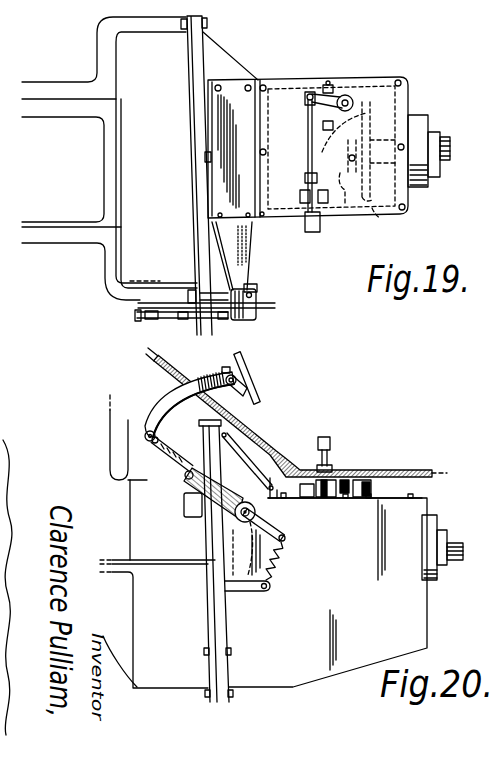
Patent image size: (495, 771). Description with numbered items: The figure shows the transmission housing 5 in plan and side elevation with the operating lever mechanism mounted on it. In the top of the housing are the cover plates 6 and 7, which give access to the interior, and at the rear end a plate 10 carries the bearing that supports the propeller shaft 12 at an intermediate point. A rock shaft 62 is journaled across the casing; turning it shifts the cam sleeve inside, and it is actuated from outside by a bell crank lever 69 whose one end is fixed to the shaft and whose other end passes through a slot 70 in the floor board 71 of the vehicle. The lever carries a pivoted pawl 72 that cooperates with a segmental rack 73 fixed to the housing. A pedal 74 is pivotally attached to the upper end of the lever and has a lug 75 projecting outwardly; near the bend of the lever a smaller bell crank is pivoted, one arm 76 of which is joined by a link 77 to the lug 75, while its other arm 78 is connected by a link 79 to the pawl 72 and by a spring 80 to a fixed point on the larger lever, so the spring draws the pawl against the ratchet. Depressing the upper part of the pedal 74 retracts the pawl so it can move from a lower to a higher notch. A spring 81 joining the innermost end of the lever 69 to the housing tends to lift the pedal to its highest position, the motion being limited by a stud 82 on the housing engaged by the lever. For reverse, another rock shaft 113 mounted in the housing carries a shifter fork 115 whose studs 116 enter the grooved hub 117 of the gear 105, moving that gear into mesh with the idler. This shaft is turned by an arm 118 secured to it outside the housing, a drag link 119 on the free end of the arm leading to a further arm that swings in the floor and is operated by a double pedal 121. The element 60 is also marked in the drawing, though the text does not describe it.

In FIG. 19, the transmission housing 5 is at (205, 73).
In FIG. 20, the transmission housing 5 is at (328, 582).
In FIG. 19, the cover plate 6 is at (306, 147).
In FIG. 20, the cover plate 6 is at (258, 441).
In FIG. 19, the cover plate 7 is at (383, 98).
In FIG. 20, the cover plate 7 is at (400, 504).
In FIG. 19, the plate 10 is at (410, 111).
In FIG. 20, the plate 10 is at (427, 614).
In FIG. 19, the propeller shaft 12 is at (446, 141).
In FIG. 20, the propeller shaft 12 is at (458, 544).
In FIG. 19, the frame member 60 is at (494, 48).
In FIG. 20, the rock shaft 62 is at (258, 493).
In FIG. 19, the bell crank lever 69 is at (164, 312).
In FIG. 20, the bell crank lever 69 is at (212, 514).
In FIG. 20, the slot 70 is at (191, 380).
In FIG. 20, the floor board 71 is at (160, 365).
In FIG. 20, the pivoted pawl 72 is at (184, 479).
In FIG. 19, the segmental rack 73 is at (187, 312).
In FIG. 20, the segmental rack 73 is at (184, 504).
In FIG. 19, the pedal 74 is at (265, 303).
In FIG. 20, the pedal 74 is at (255, 373).
In FIG. 19, the lug 75 is at (231, 320).
In FIG. 20, the lug 75 is at (231, 368).
In FIG. 20, the arm 76 is at (144, 435).
In FIG. 19, the link 77 is at (164, 320).
In FIG. 20, the link 77 is at (172, 399).
In FIG. 20, the arm 78 is at (160, 437).
In FIG. 20, the link 79 is at (178, 458).
In FIG. 20, the spring 80 is at (160, 449).
In FIG. 20, the spring 81 is at (276, 568).
In FIG. 19, the stud 82 is at (255, 288).
In FIG. 20, the stud 82 is at (257, 593).
In FIG. 19, the gear 105 is at (380, 215).
In FIG. 20, the rock shaft 113 is at (404, 478).
In FIG. 19, the shifter fork 115 is at (346, 150).
In FIG. 19, the studs 116 is at (369, 134).
In FIG. 19, the grooved hub 117 is at (352, 174).
In FIG. 19, the arm 118 is at (340, 88).
In FIG. 20, the arm 118 is at (352, 476).
In FIG. 19, the drag link 119 is at (308, 148).
In FIG. 20, the drag link 119 is at (316, 486).
In FIG. 19, the double pedal 121 is at (312, 228).
In FIG. 20, the double pedal 121 is at (333, 453).